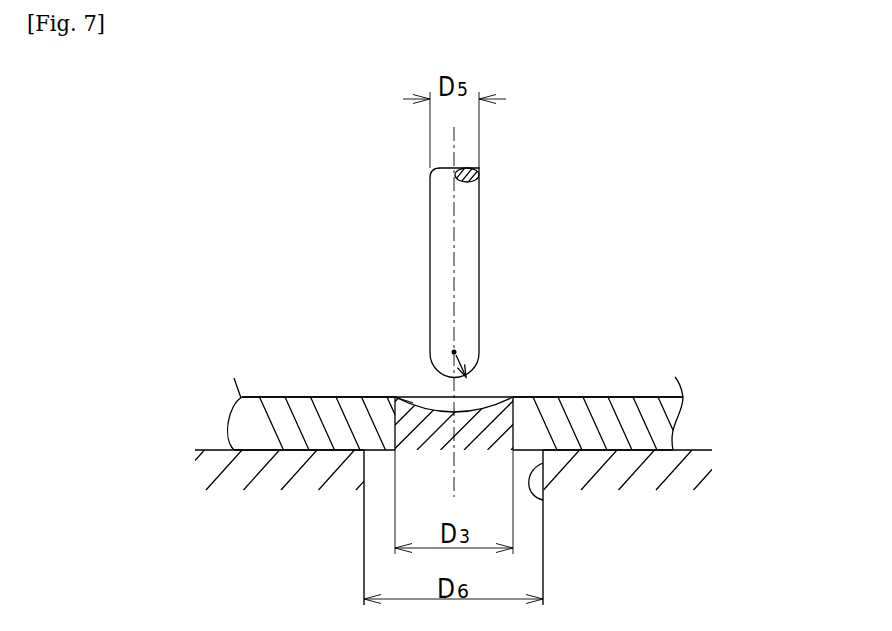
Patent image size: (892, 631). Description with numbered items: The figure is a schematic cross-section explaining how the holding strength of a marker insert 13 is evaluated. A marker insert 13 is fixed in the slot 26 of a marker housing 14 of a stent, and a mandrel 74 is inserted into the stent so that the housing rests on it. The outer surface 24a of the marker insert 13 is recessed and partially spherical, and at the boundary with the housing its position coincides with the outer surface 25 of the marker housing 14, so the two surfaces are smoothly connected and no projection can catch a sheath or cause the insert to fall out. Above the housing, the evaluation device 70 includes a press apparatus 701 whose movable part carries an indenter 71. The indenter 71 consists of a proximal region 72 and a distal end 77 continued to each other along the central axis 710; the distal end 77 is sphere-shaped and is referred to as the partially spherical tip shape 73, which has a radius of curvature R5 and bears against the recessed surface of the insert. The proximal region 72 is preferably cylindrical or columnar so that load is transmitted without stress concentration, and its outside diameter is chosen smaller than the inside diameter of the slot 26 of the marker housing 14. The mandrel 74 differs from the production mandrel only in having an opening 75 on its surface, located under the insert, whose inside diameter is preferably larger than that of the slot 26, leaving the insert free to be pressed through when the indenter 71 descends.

The marker insert 13 is at (505, 427).
The marker housing 14 is at (260, 400).
The outer surface of the marker insert 24a is at (494, 397).
The outer surface of the marker housing 25 is at (302, 397).
The slot 26 is at (410, 397).
The evaluation device 70 is at (532, 312).
The press apparatus 701 is at (451, 312).
The indenter 71 is at (451, 312).
The proximal region 72 is at (470, 205).
The partially spherical tip shape 73 is at (442, 378).
The distal end 77 is at (336, 248).
The central axis 710 is at (458, 233).
The mandrel 74 is at (211, 463).
The opening 75 is at (543, 500).
The radius of curvature R5 is at (475, 340).